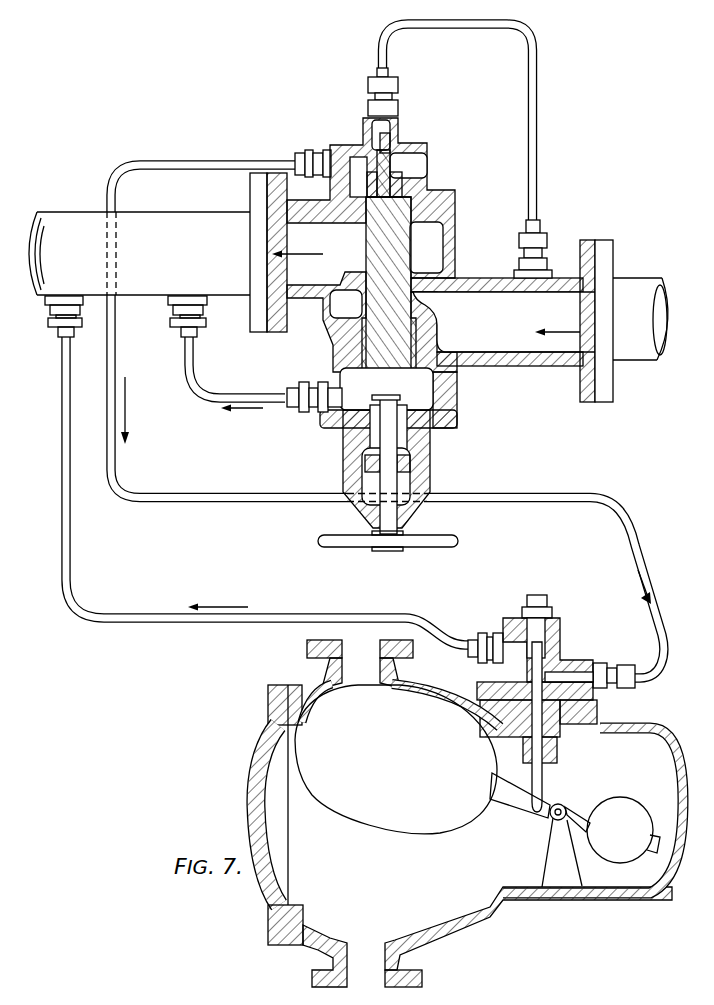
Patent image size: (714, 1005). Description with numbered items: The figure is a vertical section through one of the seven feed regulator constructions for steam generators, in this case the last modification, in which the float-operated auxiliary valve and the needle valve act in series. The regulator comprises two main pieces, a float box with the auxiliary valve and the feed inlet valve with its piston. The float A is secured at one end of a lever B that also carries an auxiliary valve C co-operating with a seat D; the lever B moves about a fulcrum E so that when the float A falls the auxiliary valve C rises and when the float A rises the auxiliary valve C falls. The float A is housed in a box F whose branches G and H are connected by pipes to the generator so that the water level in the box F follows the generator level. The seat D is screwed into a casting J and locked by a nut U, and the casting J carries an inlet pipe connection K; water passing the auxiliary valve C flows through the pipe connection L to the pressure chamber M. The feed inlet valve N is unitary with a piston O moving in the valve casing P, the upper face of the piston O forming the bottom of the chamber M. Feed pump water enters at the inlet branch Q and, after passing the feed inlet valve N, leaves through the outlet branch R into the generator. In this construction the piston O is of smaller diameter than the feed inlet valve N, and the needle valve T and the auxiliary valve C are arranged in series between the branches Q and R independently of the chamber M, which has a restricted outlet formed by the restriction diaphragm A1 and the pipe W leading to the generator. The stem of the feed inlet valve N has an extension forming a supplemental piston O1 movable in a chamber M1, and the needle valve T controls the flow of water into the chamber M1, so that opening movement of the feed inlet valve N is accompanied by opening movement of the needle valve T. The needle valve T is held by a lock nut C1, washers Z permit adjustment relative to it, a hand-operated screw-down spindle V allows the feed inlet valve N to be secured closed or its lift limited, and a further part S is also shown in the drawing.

The float A is at (378, 814).
The restriction diaphragm A1 is at (325, 410).
The lever B is at (513, 798).
The auxiliary valve C is at (527, 675).
The lock nut C1 is at (393, 110).
The auxiliary valve seat D is at (546, 664).
The fulcrum E is at (566, 804).
The float box F is at (590, 889).
The branch G is at (362, 956).
The branch H is at (360, 664).
The casting J is at (559, 633).
The inlet pipe connection K is at (643, 547).
The pipe connection L is at (177, 617).
The pressure chamber M is at (388, 398).
The chamber M1 is at (410, 168).
The feed inlet valve N is at (361, 268).
The piston O is at (389, 261).
The supplemental piston O1 is at (403, 183).
The valve casing P is at (487, 286).
The inlet branch Q is at (601, 319).
The outlet branch R is at (176, 274).
The valve casing S is at (393, 149).
The needle valve T is at (388, 140).
The nut U is at (550, 610).
The hand-operated screw-down spindle V is at (388, 473).
The pipe W is at (243, 400).
The washers Z is at (338, 185).